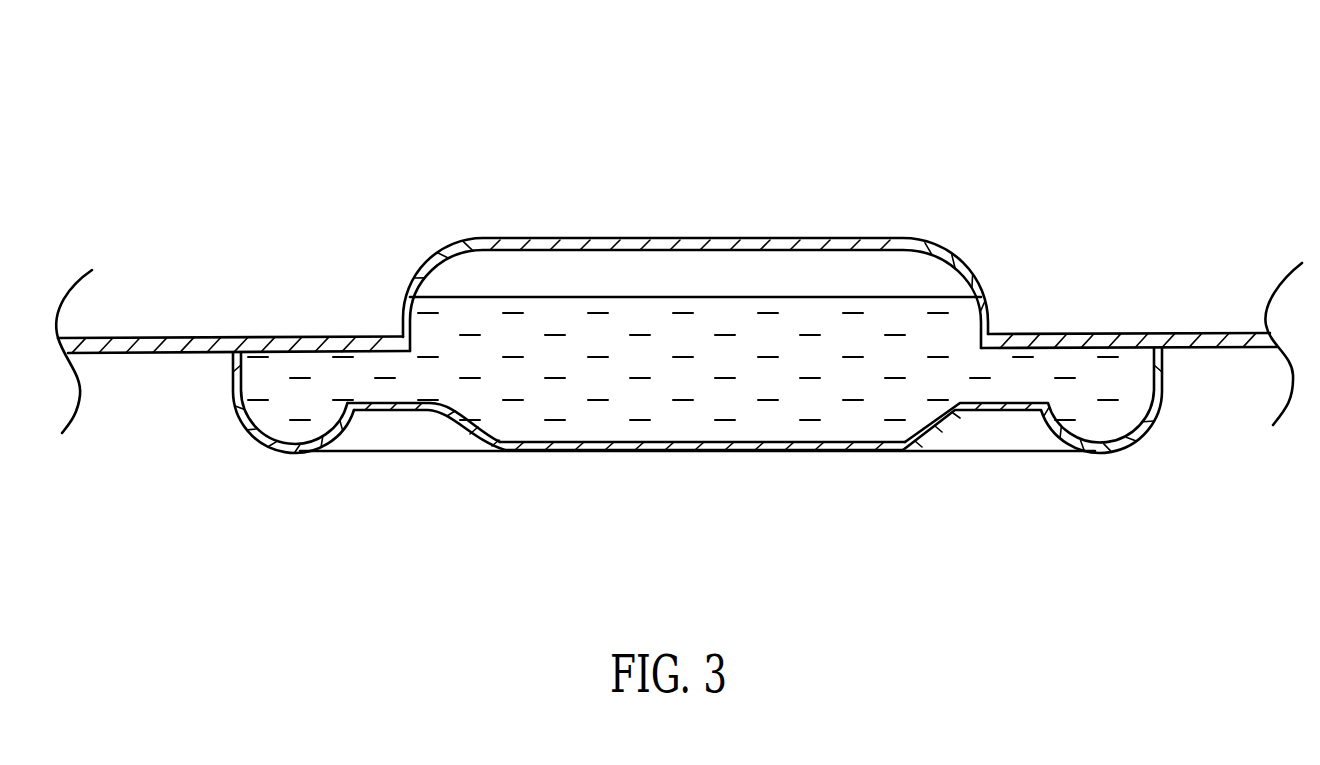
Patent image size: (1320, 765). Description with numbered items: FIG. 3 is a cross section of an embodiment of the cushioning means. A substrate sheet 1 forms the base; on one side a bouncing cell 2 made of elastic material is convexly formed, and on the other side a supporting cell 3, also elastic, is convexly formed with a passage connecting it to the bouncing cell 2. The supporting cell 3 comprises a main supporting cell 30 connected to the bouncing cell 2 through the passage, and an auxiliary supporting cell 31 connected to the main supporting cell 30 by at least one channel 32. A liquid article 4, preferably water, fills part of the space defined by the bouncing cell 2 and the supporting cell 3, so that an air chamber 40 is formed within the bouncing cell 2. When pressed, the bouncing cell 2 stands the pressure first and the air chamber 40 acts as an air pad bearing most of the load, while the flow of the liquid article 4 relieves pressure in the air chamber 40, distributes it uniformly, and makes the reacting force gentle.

The substrate sheet 1 is at (108, 342).
The bouncing cell 2 is at (777, 208).
The supporting cell 3 is at (676, 487).
The main supporting cell 30 is at (588, 450).
The auxiliary supporting cell 31 is at (255, 433).
The channel 32 is at (400, 405).
The liquid article 4 is at (802, 390).
The air chamber 40 is at (673, 273).